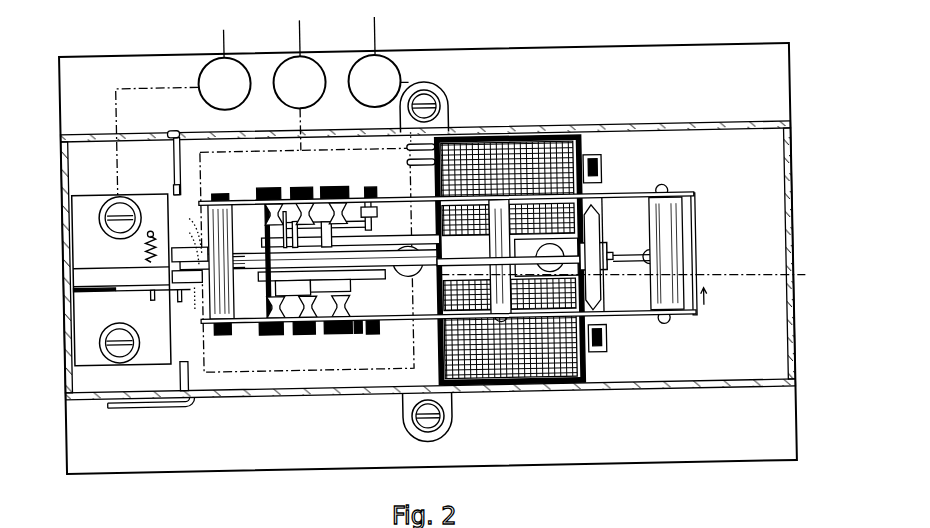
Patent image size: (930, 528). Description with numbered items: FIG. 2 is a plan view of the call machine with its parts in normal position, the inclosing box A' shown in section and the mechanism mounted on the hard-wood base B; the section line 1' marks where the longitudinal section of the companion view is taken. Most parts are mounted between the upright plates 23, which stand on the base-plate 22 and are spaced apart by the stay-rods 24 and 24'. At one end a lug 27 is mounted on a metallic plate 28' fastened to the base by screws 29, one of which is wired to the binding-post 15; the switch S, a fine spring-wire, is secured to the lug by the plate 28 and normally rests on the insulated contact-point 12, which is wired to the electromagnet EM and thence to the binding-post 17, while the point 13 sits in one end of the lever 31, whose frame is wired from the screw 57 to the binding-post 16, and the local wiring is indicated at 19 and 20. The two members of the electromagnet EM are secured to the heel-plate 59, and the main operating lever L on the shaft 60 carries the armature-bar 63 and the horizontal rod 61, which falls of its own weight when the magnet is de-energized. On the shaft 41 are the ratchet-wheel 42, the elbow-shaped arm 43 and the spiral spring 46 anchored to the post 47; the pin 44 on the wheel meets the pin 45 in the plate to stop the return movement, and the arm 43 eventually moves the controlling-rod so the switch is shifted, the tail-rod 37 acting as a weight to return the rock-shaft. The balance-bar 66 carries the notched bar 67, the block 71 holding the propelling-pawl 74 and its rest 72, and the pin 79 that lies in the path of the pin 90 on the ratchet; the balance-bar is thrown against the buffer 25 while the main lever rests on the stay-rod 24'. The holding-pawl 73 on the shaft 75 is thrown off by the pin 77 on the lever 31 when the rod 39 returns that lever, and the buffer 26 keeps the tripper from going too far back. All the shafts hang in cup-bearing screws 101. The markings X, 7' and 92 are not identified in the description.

The binding-post 15 is at (184, 126).
The binding-post 16 is at (300, 103).
The binding-post 17 is at (378, 80).
The local wiring 19 is at (386, 34).
The local wiring 20 is at (310, 38).
The fastening screw X is at (440, 90).
The electromagnet EM is at (533, 138).
The heel-plate 59 is at (409, 148).
The armature-bar 63 is at (603, 166).
The upright plates 23 is at (655, 195).
The base-plate 22 is at (697, 212).
The stay-rods 24 is at (618, 305).
The shaft 60 is at (603, 232).
The main propelling lever L is at (613, 258).
The section line 1' is at (632, 287).
The buffer 26 is at (544, 370).
The cup-bearing screws 101 is at (307, 266).
The rod 39 is at (176, 164).
The screws 29 is at (116, 368).
The metallic plate 28' is at (99, 252).
The lug 27 is at (72, 276).
The plate 28 is at (112, 296).
The switch S is at (141, 295).
The contact-point 12 is at (152, 296).
The contact-point 13 is at (178, 298).
The lever 31 is at (192, 306).
The screw 57 is at (184, 191).
The bar 67 is at (188, 232).
The balance-bar 66 is at (186, 245).
The guide post 7' is at (226, 261).
The rest 72 is at (224, 190).
The stay-rod 24' is at (218, 340).
The buffer 25 is at (262, 333).
The arm 43 is at (372, 238).
The pin 77 is at (373, 223).
The pin 90 is at (366, 200).
The pin 44 is at (378, 211).
The pin 45 is at (378, 191).
The tail-rod 37 is at (380, 280).
The slide block 92 is at (347, 295).
The block 71 is at (274, 199).
The propelling-pawl 74 is at (284, 212).
The holding-pawl 73 is at (304, 185).
The pin 79 is at (336, 200).
The ratchet-wheel 42 is at (345, 185).
The horizontal rod 61 is at (278, 318).
The shaft 75 is at (306, 333).
The shaft 41 is at (336, 333).
The spiral spring 46 is at (357, 333).
The post 47 is at (376, 334).
The box A' is at (428, 273).
The base B is at (428, 258).